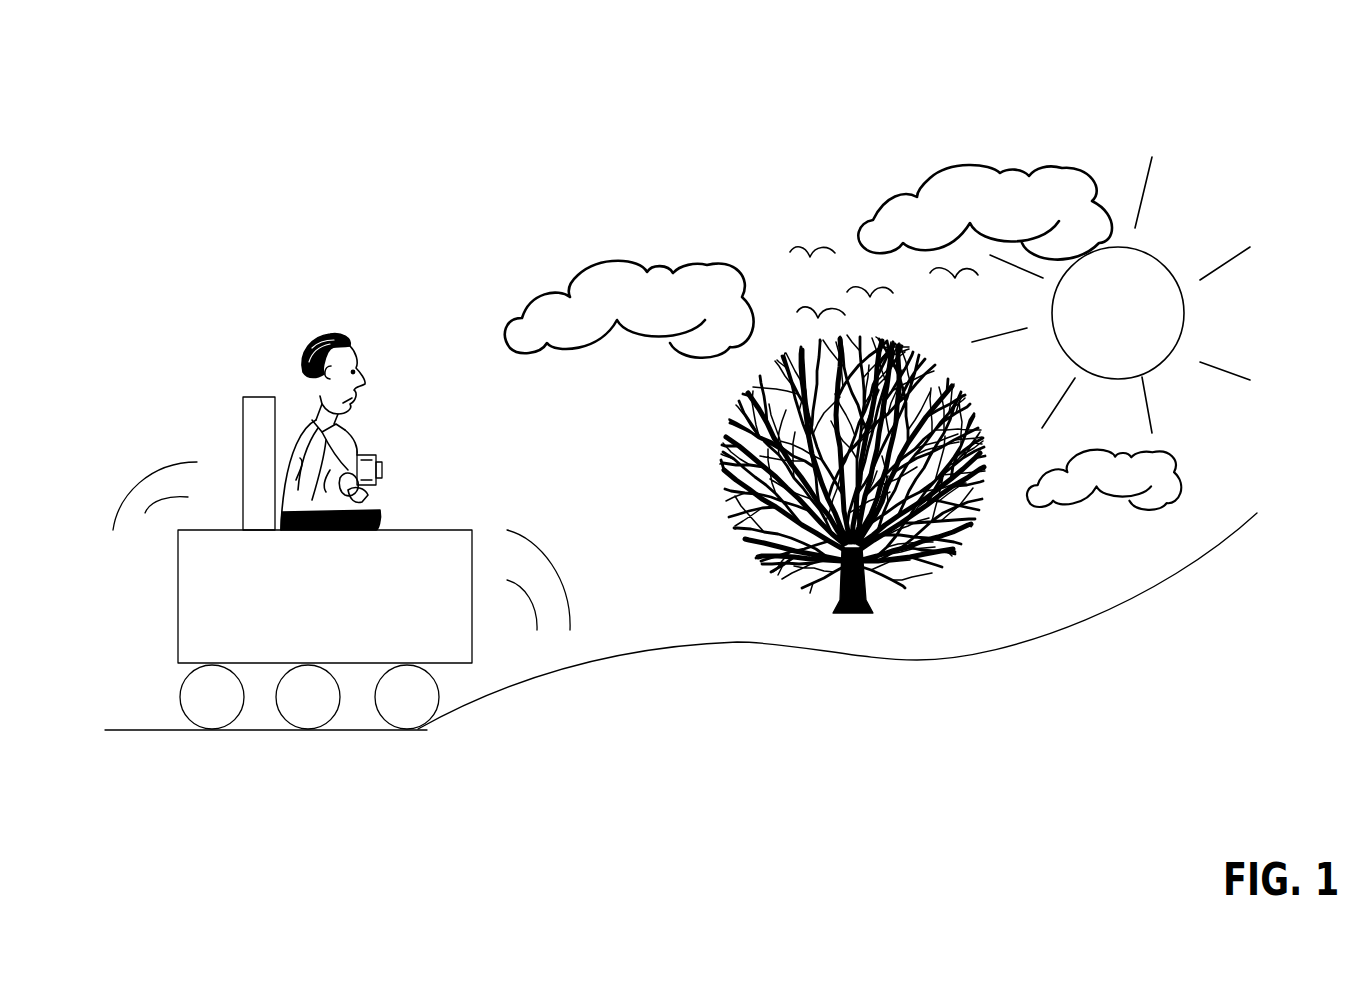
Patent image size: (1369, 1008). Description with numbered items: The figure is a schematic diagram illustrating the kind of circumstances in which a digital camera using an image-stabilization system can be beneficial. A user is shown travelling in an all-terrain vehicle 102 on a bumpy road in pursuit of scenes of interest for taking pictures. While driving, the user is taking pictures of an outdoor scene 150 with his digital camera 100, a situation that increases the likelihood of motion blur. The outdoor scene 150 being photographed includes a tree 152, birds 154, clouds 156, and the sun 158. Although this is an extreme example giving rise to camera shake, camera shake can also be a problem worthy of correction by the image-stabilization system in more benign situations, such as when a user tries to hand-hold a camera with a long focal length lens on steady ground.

The digital camera 100 is at (365, 453).
The all-terrain vehicle 102 is at (440, 528).
The outdoor scene 150 is at (790, 148).
The tree 152 is at (720, 475).
The birds 154 is at (795, 243).
The clouds 156 is at (965, 162).
The sun 158 is at (1158, 253).